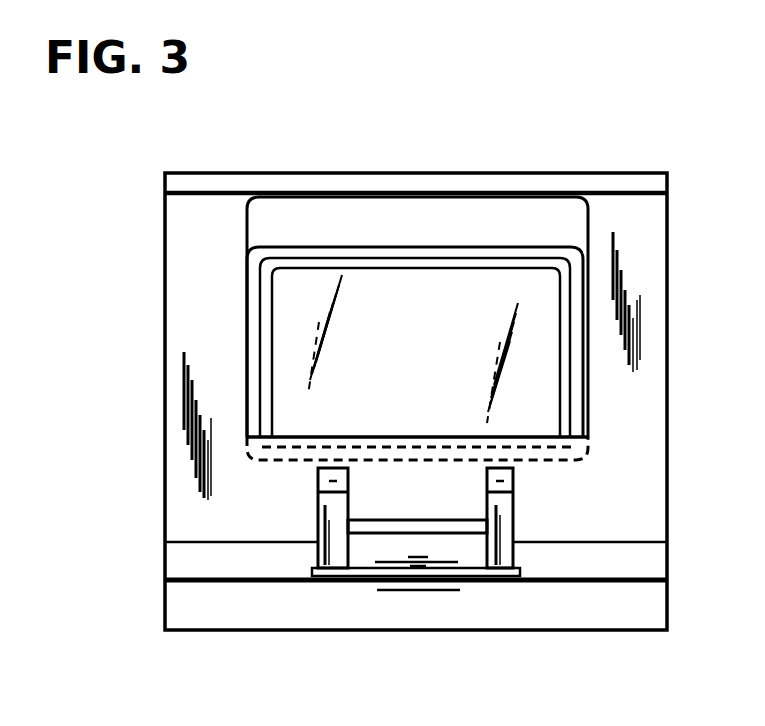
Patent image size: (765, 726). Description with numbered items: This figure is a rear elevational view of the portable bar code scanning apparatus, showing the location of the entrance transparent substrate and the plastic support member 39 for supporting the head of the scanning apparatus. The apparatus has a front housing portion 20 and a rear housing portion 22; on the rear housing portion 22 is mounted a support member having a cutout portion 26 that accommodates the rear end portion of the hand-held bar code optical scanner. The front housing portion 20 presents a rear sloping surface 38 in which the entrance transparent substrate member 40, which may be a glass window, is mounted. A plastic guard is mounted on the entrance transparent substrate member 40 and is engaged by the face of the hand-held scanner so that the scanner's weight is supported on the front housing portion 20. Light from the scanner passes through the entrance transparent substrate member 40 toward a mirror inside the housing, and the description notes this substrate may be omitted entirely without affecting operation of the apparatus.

The front housing portion 20 is at (660, 305).
The rear housing portion 22 is at (607, 632).
The cutout portion 26 is at (426, 518).
The rear sloping surface 38 is at (646, 471).
The mounting panel 39 is at (330, 208).
The entrance transparent substrate member 40 is at (378, 282).